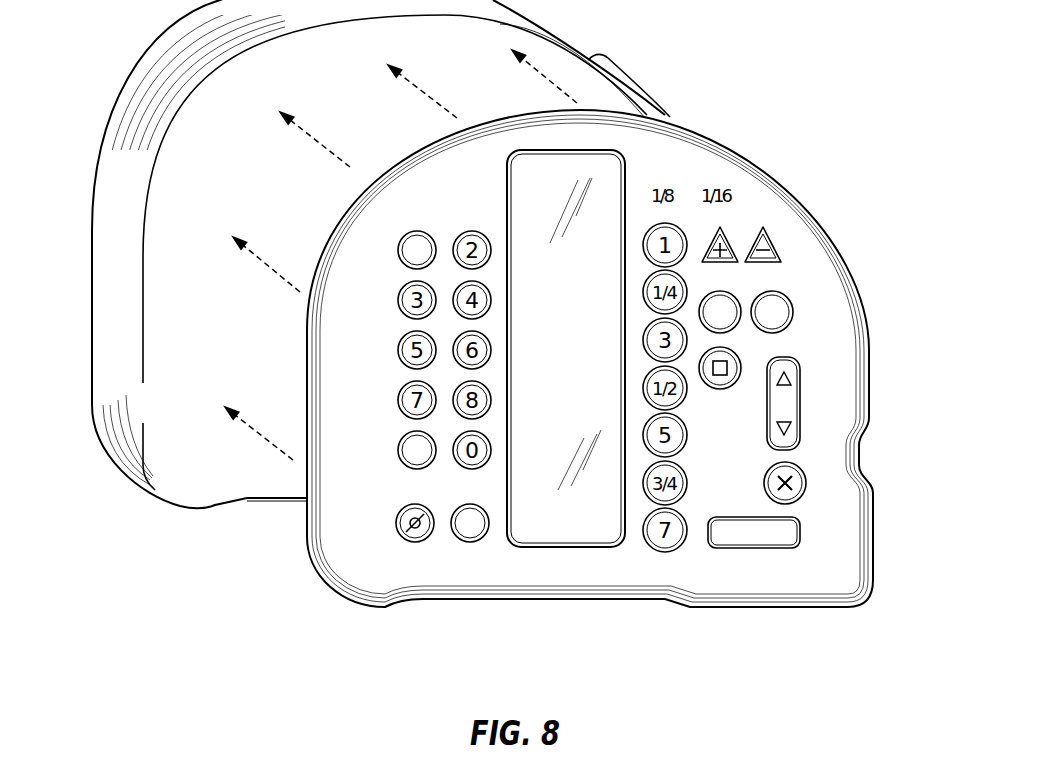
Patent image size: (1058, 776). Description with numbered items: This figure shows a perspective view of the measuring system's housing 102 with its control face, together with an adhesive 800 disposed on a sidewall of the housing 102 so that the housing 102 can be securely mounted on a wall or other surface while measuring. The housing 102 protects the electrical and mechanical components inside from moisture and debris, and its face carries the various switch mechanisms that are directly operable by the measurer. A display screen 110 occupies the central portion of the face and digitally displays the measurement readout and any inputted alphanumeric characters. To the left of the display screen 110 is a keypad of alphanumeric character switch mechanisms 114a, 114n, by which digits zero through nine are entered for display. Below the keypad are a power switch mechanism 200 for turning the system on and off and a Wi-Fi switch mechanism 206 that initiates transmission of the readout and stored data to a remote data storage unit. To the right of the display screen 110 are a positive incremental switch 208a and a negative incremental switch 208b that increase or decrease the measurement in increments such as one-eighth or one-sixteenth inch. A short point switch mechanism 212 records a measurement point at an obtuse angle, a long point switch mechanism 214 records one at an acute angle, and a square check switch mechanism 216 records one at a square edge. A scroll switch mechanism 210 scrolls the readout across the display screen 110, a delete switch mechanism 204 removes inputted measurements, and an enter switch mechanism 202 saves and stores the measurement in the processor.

The adhesive 800 is at (133, 98).
The housing 102 is at (712, 141).
The display screen 110 is at (540, 230).
The alphanumeric character switch mechanism 114a is at (398, 247).
The alphanumeric character switch mechanism 114n is at (415, 469).
The positive incremental switch 208a is at (718, 228).
The negative incremental switch 208b is at (773, 243).
The short point switch mechanism 212 is at (737, 296).
The long point switch mechanism 214 is at (792, 312).
The square check switch mechanism 216 is at (713, 389).
The scroll switch mechanism 210 is at (795, 410).
The delete switch mechanism 204 is at (806, 483).
The enter switch mechanism 202 is at (800, 530).
The power switch mechanism 200 is at (416, 543).
The Wi-Fi switch mechanism 206 is at (470, 543).